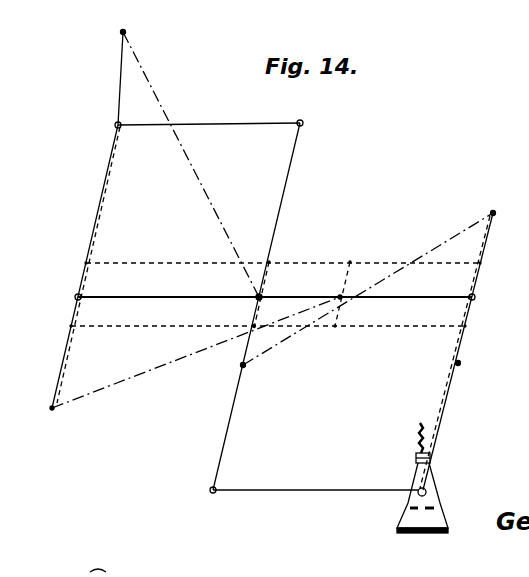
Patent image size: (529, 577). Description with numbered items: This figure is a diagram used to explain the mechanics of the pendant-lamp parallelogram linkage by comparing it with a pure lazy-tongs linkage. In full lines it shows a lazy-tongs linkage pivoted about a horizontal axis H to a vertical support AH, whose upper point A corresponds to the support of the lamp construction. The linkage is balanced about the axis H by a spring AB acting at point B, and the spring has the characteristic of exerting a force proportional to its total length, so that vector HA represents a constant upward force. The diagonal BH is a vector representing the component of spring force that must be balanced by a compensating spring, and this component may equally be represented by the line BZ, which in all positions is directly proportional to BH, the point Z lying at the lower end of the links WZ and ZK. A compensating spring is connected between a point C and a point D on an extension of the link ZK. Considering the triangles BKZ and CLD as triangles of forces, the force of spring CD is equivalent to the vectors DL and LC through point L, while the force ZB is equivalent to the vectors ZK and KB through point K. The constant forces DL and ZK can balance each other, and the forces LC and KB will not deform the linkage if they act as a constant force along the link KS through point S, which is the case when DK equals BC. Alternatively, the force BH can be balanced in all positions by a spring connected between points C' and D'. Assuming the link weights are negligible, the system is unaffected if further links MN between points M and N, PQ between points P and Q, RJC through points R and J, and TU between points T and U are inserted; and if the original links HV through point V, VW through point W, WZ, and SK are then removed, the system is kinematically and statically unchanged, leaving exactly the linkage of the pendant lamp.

The spring anchorage point on support A is at (114, 37).
The horizontal pivot axis H is at (108, 126).
The link end point V is at (309, 124).
The inserted link end point M is at (74, 265).
The link end point S is at (69, 298).
The inserted link end point P is at (64, 328).
The alternative compensating spring point C' is at (41, 409).
The inserted link end point R is at (277, 254).
The spring attachment point on linkage B is at (267, 288).
The inserted link point J is at (253, 325).
The compensating spring point C is at (237, 368).
The inserted link end point T is at (351, 253).
The alternative compensating spring point D' is at (332, 287).
The inserted link end point U is at (332, 336).
The compensating spring point on link extension D is at (501, 214).
The inserted link end point N is at (489, 263).
The link junction point K is at (482, 297).
The inserted link end point Q is at (474, 328).
The force triangle point L is at (465, 362).
The link end point W is at (206, 500).
The link end point Z is at (431, 492).